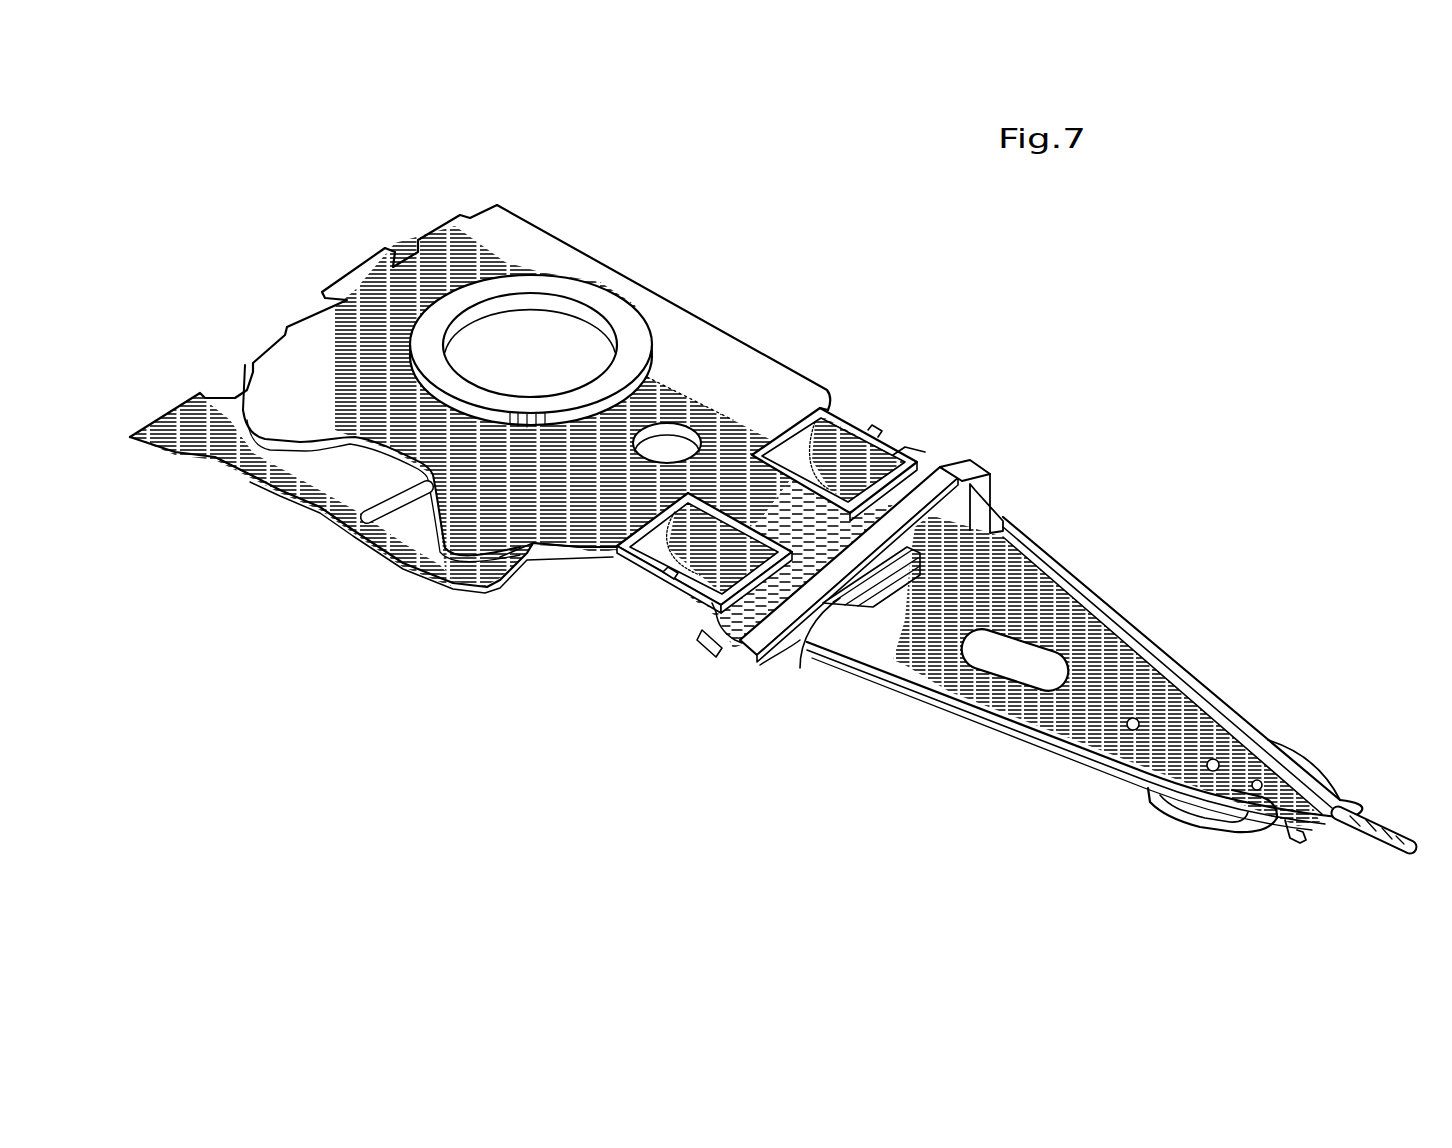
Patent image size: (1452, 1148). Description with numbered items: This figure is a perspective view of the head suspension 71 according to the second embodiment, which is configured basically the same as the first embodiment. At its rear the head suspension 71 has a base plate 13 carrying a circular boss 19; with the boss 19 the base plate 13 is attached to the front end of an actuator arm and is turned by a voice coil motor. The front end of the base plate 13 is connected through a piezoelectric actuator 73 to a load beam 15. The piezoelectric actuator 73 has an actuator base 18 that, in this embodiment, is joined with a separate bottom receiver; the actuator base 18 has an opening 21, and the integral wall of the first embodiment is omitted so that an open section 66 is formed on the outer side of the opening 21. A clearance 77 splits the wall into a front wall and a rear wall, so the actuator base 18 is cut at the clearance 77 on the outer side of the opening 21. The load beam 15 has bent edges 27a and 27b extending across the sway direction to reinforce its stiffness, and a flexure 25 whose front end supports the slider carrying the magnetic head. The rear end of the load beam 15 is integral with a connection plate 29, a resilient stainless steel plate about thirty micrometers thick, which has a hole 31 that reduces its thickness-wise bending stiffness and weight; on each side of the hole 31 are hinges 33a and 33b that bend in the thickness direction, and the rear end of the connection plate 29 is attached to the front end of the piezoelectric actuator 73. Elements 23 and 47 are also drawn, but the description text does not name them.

The base plate 13 is at (648, 300).
The load beam 15 is at (1128, 666).
The actuator base 18 is at (735, 478).
The boss 19 is at (557, 305).
The opening 21 is at (810, 432).
The curved portion 23 is at (836, 445).
The flexure 25 is at (1217, 809).
The bent edge 27a is at (1084, 590).
The bent edge 27b is at (993, 727).
The connection plate 29 is at (990, 505).
The hole 31 is at (800, 668).
The hinge 33a is at (1005, 518).
The hinge 33b is at (803, 618).
The tab 47 is at (912, 455).
The open section 66 is at (855, 416).
The head suspension 71 is at (1148, 268).
The piezoelectric actuator 73 is at (1036, 343).
The clearance 77 is at (876, 438).